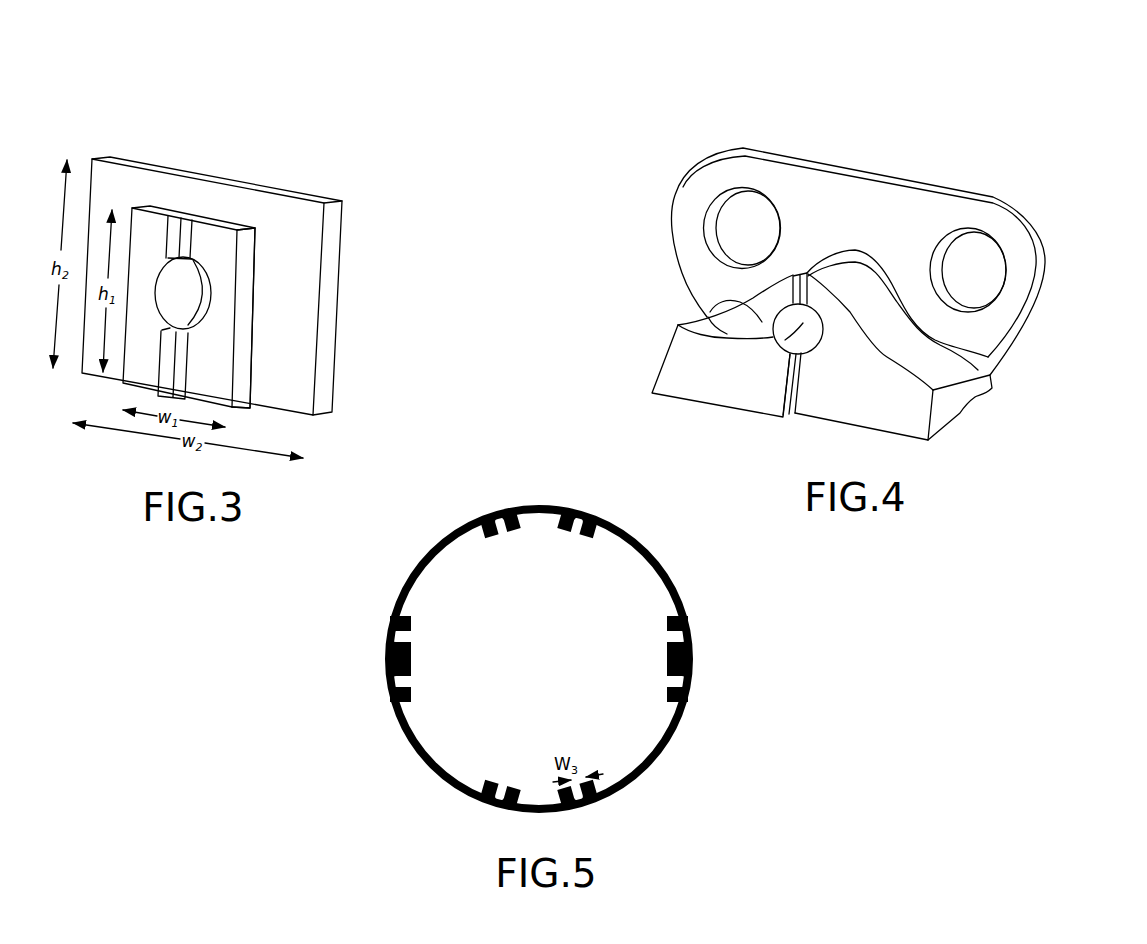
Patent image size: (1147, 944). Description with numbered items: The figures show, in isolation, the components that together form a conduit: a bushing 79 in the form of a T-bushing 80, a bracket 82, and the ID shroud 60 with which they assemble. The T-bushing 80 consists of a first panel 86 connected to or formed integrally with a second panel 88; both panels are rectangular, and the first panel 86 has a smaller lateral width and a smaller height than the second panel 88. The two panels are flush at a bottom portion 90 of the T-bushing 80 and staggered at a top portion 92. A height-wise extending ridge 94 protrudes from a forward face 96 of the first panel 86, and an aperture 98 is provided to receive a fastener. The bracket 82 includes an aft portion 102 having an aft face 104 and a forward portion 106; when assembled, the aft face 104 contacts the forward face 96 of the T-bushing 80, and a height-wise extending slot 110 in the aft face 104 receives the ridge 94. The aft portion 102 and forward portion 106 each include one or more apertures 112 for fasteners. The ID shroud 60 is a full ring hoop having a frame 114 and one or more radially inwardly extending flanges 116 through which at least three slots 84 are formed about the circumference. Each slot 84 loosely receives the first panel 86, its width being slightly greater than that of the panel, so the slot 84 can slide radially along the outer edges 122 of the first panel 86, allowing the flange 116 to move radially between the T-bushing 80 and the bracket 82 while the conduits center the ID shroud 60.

In FIG. 3, the bushing 79 is at (299, 102).
In FIG. 3, the T-bushing 80 is at (308, 142).
In FIG. 4, the bracket 82 is at (927, 129).
In FIG. 5, the slot 84 is at (580, 528).
In FIG. 3, the first panel 86 is at (212, 247).
In FIG. 3, the second panel 88 is at (303, 320).
In FIG. 3, the bottom portion 90 is at (357, 408).
In FIG. 3, the top portion 92 is at (360, 215).
In FIG. 3, the ridge 94 is at (177, 235).
In FIG. 3, the forward face 96 is at (218, 370).
In FIG. 3, the aperture 98 is at (180, 290).
In FIG. 4, the aft portion 102 is at (942, 405).
In FIG. 4, the aft face 104 is at (858, 394).
In FIG. 4, the forward portion 106 is at (1030, 280).
In FIG. 4, the slot 110 is at (799, 268).
In FIG. 4, the apertures 112 is at (980, 267).
In FIG. 5, the frame 114 is at (691, 622).
In FIG. 5, the flanges 116 is at (490, 538).
In FIG. 3, the outer edges 122 is at (247, 290).
In FIG. 5, the ID shroud 60 is at (573, 482).